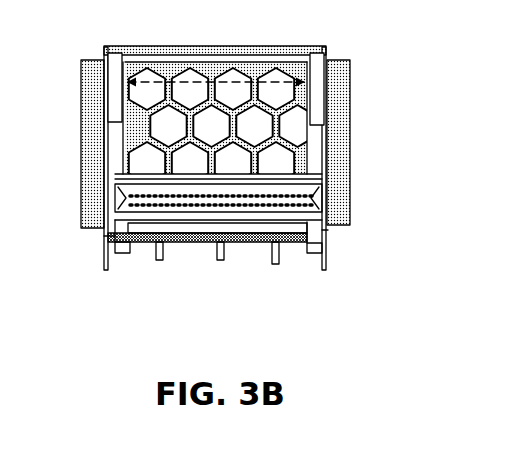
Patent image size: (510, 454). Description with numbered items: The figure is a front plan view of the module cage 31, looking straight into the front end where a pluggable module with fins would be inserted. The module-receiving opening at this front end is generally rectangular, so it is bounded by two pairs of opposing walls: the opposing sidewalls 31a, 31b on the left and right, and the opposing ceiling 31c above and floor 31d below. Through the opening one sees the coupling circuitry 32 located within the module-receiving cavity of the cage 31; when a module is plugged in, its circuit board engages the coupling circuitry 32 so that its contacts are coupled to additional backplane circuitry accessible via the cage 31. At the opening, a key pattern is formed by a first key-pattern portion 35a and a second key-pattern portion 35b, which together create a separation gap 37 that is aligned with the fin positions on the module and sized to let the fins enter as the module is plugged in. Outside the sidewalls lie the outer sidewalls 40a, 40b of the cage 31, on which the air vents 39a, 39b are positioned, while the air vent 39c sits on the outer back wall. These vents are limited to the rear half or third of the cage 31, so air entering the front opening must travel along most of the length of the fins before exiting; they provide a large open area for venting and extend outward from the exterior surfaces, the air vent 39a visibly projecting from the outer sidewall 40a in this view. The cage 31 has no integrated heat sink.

The cage 31 is at (60, 209).
The sidewall 31a is at (116, 156).
The sidewall 31b is at (314, 152).
The ceiling 31c is at (203, 56).
The floor 31d is at (178, 226).
The coupling circuitry 32 is at (130, 206).
The first key-pattern portion 35a is at (116, 90).
The second key-pattern portion 35b is at (317, 95).
The separation gap 37 is at (193, 84).
The air vent 39a is at (80, 72).
The air vent 39b is at (351, 72).
The air vent 39c is at (172, 111).
The outer sidewall 40a is at (104, 237).
The outer sidewall 40b is at (328, 237).